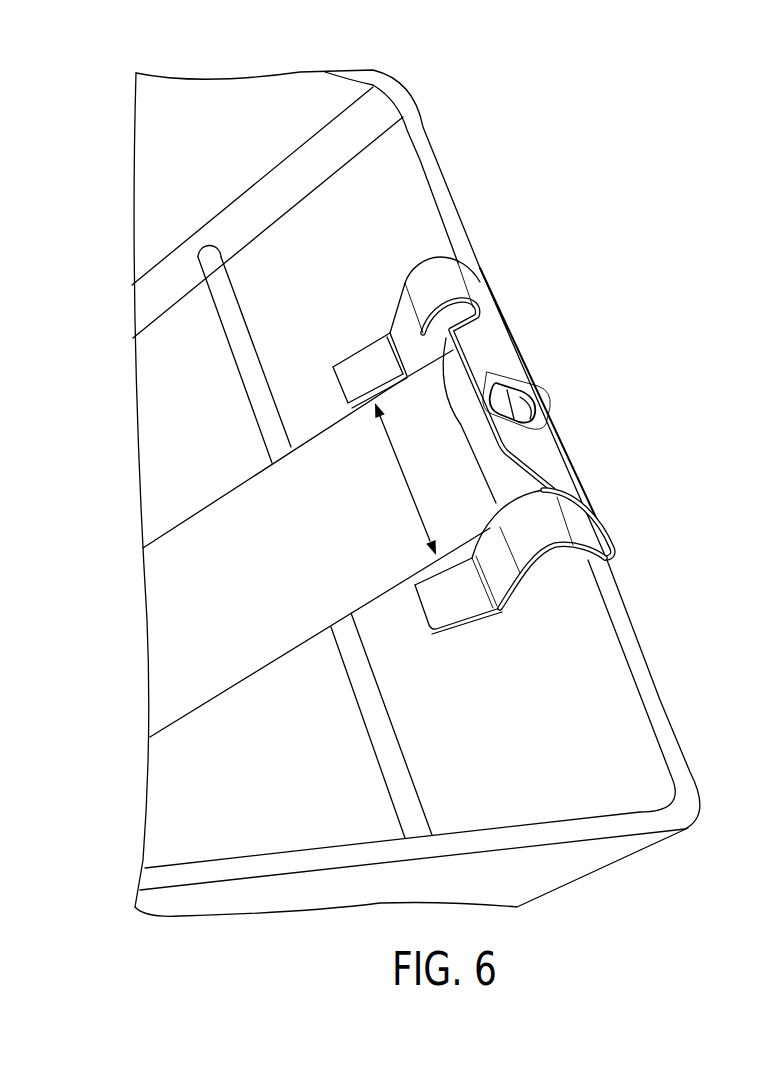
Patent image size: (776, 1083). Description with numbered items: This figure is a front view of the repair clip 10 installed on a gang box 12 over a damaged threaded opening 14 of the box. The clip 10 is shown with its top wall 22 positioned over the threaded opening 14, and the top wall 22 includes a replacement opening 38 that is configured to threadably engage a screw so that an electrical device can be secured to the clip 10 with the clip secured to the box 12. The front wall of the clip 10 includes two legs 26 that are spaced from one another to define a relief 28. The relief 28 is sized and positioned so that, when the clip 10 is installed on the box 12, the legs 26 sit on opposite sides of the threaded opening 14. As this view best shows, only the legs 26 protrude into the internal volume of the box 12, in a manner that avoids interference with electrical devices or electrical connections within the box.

The repair clip 10 is at (550, 326).
The gang box 12 is at (655, 690).
The threaded opening 14 is at (455, 400).
The top wall 22 is at (494, 292).
The legs 26 is at (403, 311).
The relief 28 is at (408, 488).
The replacement opening 38 is at (538, 410).